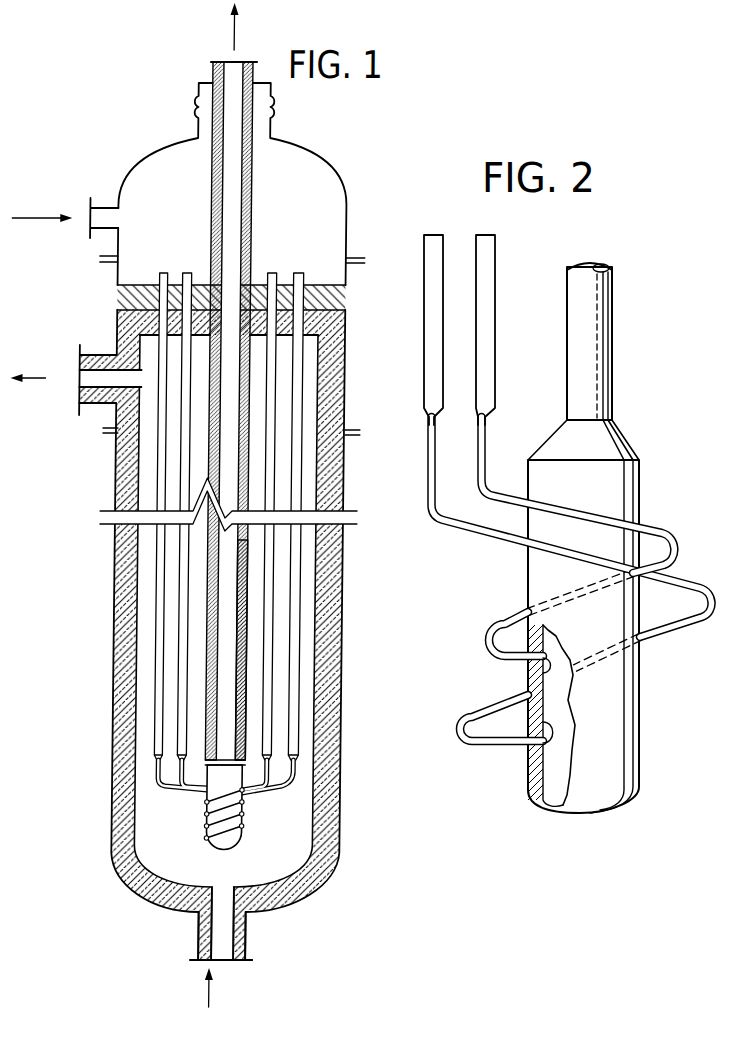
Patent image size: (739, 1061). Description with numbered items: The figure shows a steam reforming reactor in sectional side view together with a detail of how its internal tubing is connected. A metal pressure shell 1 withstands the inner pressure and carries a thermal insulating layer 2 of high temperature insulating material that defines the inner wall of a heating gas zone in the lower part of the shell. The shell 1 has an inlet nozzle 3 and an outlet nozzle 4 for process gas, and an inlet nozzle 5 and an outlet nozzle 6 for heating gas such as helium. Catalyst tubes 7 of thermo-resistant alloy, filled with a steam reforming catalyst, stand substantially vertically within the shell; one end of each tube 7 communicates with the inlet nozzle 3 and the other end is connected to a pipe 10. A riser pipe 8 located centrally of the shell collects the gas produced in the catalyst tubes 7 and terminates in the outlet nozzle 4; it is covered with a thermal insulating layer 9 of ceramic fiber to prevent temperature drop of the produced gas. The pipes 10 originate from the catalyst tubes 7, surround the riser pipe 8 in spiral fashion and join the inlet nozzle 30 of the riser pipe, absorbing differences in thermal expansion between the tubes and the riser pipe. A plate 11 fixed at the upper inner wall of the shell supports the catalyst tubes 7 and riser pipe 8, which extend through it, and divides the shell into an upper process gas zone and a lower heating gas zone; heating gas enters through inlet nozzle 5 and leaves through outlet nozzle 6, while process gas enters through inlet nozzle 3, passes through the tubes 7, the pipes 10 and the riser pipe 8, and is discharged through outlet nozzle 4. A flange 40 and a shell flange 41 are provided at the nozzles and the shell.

In FIG. 1, the pressure shell 1 is at (349, 443).
In FIG. 1, the thermal insulating layer 2 is at (332, 474).
In FIG. 1, the inlet nozzle 3 is at (104, 208).
In FIG. 1, the outlet nozzle 4 is at (225, 85).
In FIG. 1, the inlet nozzle 5 is at (233, 928).
In FIG. 1, the outlet nozzle 6 is at (83, 388).
In FIG. 1, the catalyst tubes 7 is at (306, 593).
In FIG. 2, the catalyst tubes 7 is at (487, 367).
In FIG. 1, the riser pipe 8 is at (226, 614).
In FIG. 2, the riser pipe 8 is at (603, 368).
In FIG. 1, the thermal insulating layer 9 is at (251, 634).
In FIG. 2, the thermal insulating layer 9 is at (528, 782).
In FIG. 1, the pipes 10 is at (171, 787).
In FIG. 2, the pipes 10 is at (492, 496).
In FIG. 1, the plate 11 is at (343, 297).
In FIG. 2, the inlet nozzle 30 is at (545, 667).
In FIG. 1, the flange 40 is at (252, 62).
In FIG. 1, the shell flange 41 is at (109, 264).